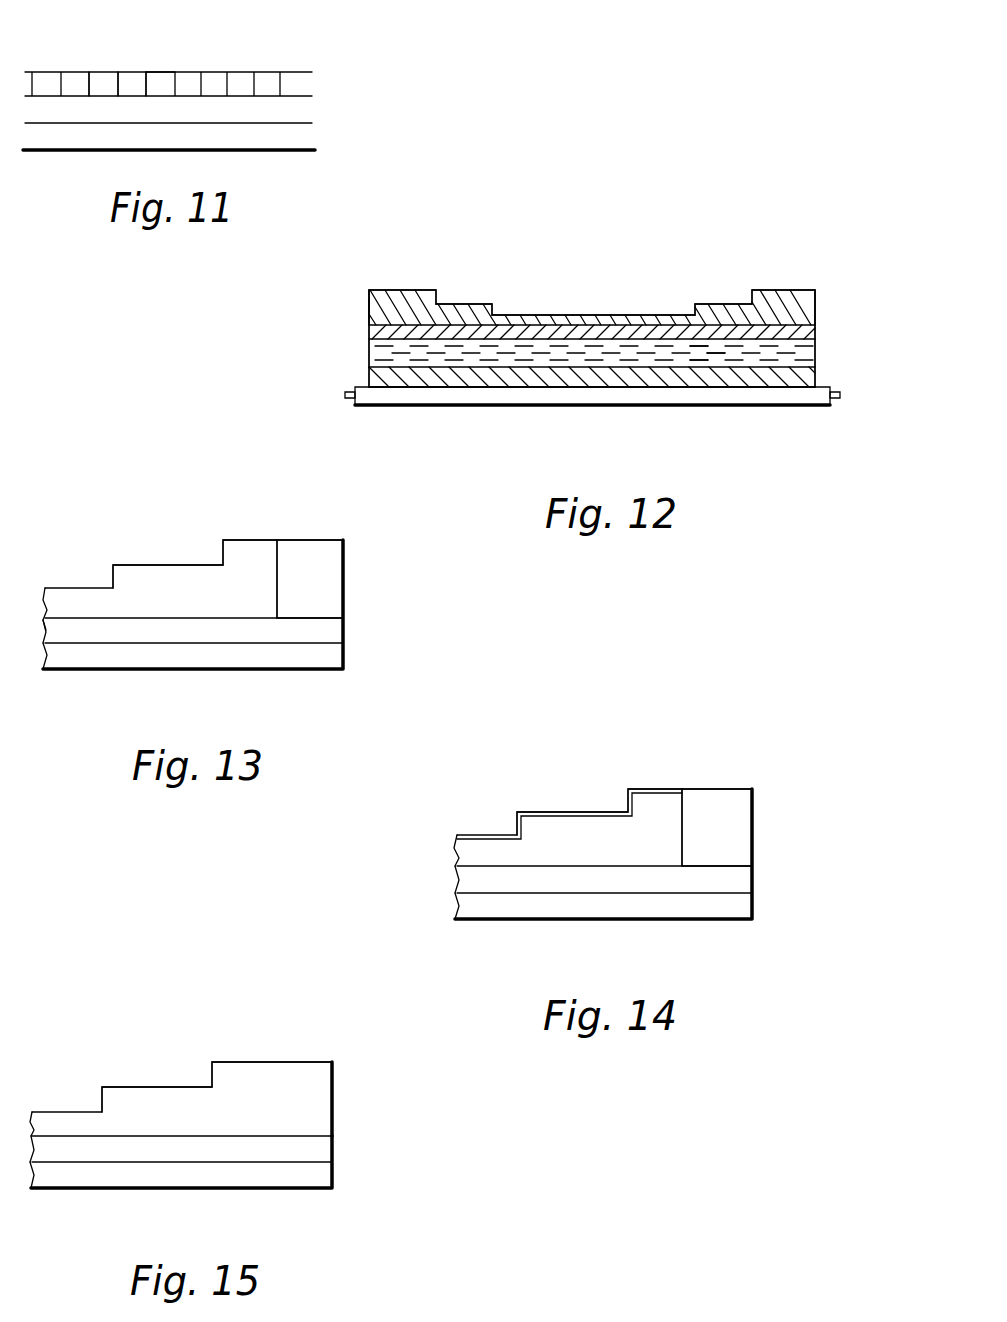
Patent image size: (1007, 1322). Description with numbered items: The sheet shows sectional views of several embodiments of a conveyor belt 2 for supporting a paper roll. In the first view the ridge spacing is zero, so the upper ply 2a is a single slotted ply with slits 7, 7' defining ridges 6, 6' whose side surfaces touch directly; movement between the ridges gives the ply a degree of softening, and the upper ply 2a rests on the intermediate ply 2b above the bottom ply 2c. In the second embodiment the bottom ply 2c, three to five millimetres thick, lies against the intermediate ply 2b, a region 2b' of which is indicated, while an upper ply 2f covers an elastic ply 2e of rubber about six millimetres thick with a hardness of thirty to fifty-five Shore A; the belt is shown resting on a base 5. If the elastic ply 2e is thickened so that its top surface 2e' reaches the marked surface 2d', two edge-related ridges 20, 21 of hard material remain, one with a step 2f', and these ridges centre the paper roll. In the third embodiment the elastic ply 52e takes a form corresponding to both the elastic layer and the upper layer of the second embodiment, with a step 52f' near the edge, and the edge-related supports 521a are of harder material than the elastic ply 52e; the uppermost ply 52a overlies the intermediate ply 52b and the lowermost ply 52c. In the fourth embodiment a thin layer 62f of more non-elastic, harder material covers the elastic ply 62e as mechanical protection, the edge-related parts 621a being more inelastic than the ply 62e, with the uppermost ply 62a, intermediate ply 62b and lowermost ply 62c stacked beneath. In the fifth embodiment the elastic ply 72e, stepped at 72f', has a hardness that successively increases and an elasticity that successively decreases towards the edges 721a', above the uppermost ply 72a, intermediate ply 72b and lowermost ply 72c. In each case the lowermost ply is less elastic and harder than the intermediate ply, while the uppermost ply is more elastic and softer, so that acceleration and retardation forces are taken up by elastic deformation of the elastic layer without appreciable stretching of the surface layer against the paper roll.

In FIG. 12, the recording medium / stamper 2 is at (744, 262).
In FIG. 11, the upper ply 2a is at (307, 82).
In FIG. 12, the upper ply 2a is at (826, 290).
In FIG. 11, the intermediate ply 2b is at (210, 107).
In FIG. 12, the intermediate ply 2b is at (629, 354).
In FIG. 12, the intermediate layer portion 2b' is at (714, 412).
In FIG. 11, the bottom ply 2c is at (303, 135).
In FIG. 12, the bottom ply 2c is at (817, 377).
In FIG. 12, the marked surface 2d' is at (593, 283).
In FIG. 12, the elastic ply 2e is at (559, 335).
In FIG. 12, the top surface of elastic ply 2e' is at (465, 286).
In FIG. 12, the upper ply 2f is at (336, 308).
In FIG. 12, the step portion 2f' is at (713, 274).
In FIG. 12, the base plate 5 is at (658, 405).
In FIG. 11, the ridge 6 is at (156, 53).
In FIG. 11, the ridge 6' is at (71, 53).
In FIG. 11, the slit 7 is at (195, 41).
In FIG. 11, the slit 7' is at (111, 53).
In FIG. 12, the edge-related ridge 20 is at (398, 290).
In FIG. 12, the edge-related ridge 21 is at (778, 290).
In FIG. 13, the uppermost ply 52a is at (352, 540).
In FIG. 13, the intermediate ply 52b is at (170, 632).
In FIG. 13, the lowermost ply 52c is at (292, 652).
In FIG. 13, the elastic ply 52e is at (237, 583).
In FIG. 13, the step portion 52f' is at (168, 540).
In FIG. 13, the edge-related part 521a is at (297, 570).
In FIG. 14, the uppermost ply 62a is at (760, 789).
In FIG. 14, the intermediate ply 62b is at (692, 878).
In FIG. 14, the lowermost ply 62c is at (732, 900).
In FIG. 14, the elastic ply 62e is at (550, 840).
In FIG. 14, the thin layer 62f is at (653, 790).
In FIG. 14, the edge-related part 621a is at (715, 818).
In FIG. 15, the uppermost ply 72a is at (340, 1062).
In FIG. 15, the intermediate ply 72b is at (108, 1150).
In FIG. 15, the lowermost ply 72c is at (208, 1173).
In FIG. 15, the elastic ply 72e is at (180, 1108).
In FIG. 15, the step portion 72f' is at (140, 1071).
In FIG. 15, the edge 721a' is at (380, 1079).